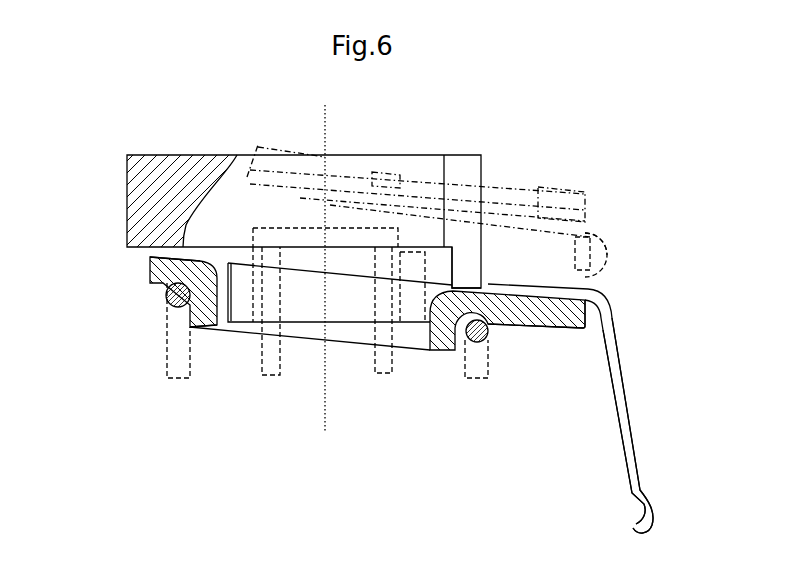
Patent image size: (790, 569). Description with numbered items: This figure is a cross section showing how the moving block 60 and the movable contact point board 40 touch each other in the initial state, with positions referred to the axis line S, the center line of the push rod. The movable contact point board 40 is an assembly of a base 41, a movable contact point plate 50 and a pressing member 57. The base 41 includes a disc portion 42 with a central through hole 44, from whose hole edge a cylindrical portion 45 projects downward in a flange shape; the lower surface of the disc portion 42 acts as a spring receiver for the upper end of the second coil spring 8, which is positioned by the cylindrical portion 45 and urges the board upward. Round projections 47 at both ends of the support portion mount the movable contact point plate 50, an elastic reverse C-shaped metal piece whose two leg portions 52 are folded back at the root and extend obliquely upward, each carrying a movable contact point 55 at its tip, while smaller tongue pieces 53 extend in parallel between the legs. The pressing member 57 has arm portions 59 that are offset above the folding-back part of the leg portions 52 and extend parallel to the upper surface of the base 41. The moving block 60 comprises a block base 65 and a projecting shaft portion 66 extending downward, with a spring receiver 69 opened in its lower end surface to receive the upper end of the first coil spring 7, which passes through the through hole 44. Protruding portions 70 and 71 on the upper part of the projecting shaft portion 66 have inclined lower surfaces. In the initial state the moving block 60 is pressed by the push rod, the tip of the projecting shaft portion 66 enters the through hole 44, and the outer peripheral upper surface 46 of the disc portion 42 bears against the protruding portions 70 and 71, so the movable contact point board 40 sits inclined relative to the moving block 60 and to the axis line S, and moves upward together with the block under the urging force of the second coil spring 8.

The axis line S is at (325, 254).
The first coil spring 7 is at (277, 366).
The second coil spring 8 is at (187, 365).
The movable contact point board 40 is at (149, 281).
The base 41 is at (535, 328).
The disc portion 42 is at (163, 300).
The through hole 44 is at (430, 347).
The cylindrical portion 45 is at (187, 330).
The outer peripheral upper surface 46 is at (150, 255).
The round projection 47 is at (490, 333).
The movable contact point plate 50 is at (617, 253).
The leg portion 52 is at (540, 188).
The tongue piece 53 is at (627, 405).
The movable contact point 55 is at (264, 148).
The pressing member 57 is at (612, 238).
The arm portion 59 is at (492, 178).
The moving block 60 is at (191, 155).
The block base 65 is at (483, 241).
The projecting shaft portion 66 is at (317, 340).
The spring receiver 69 is at (310, 240).
The protruding portion 70 is at (574, 286).
The protruding portion 71 is at (207, 246).